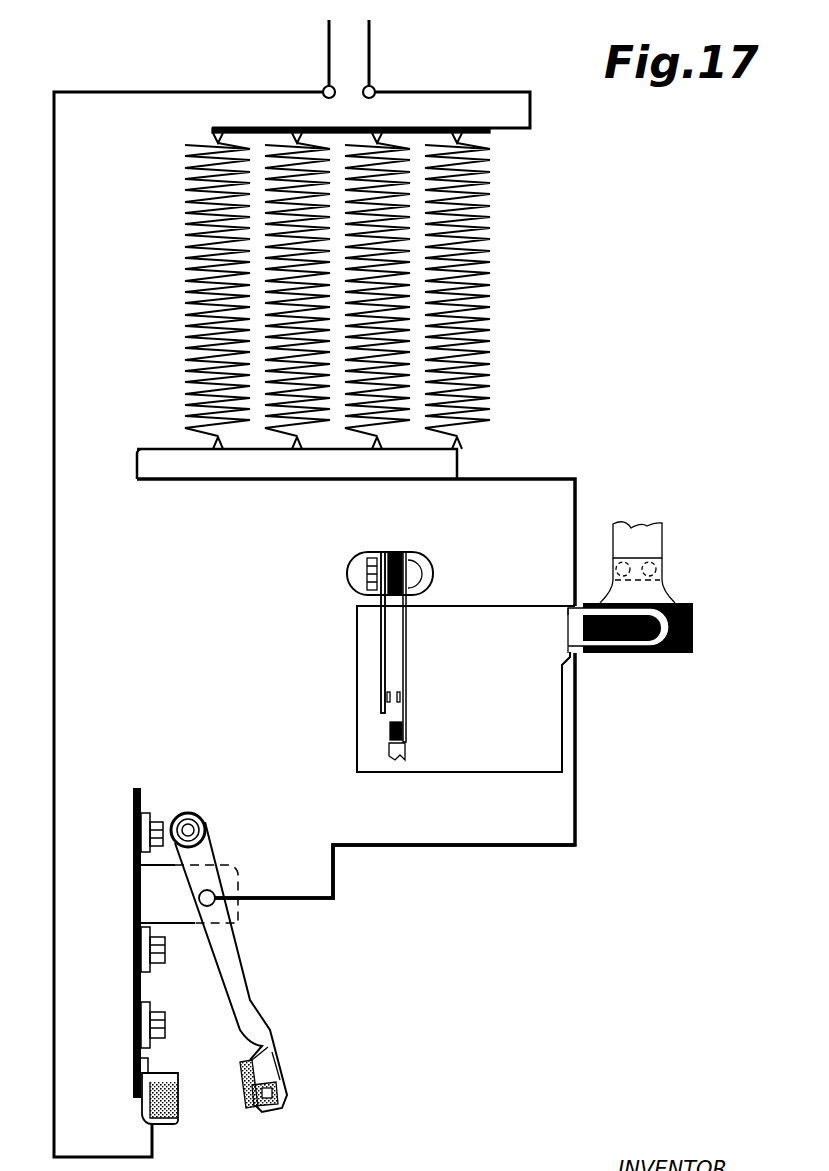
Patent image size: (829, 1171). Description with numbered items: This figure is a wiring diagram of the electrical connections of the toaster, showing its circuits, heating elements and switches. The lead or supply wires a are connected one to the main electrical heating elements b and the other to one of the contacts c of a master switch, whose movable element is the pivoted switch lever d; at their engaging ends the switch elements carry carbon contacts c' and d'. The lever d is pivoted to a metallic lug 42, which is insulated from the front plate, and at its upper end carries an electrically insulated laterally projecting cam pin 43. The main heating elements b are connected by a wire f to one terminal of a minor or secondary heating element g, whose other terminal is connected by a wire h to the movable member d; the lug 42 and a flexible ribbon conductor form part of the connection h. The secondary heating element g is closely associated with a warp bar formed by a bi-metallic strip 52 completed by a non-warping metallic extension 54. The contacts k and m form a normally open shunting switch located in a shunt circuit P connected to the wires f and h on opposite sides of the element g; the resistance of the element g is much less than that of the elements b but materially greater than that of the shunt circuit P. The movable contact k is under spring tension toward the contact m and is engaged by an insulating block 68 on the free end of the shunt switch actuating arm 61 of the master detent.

The lead or supply wires a is at (283, 92).
The main electrical heating elements b is at (185, 250).
The wire f is at (524, 479).
The wire h is at (516, 844).
The shunt circuit P is at (513, 606).
The movable contact of shunting switch k is at (404, 663).
The contact of shunting switch m is at (383, 652).
The insulating block 68 is at (400, 741).
The shunt switch actuating arm 61 is at (392, 759).
The minor or secondary heating element g is at (609, 653).
The non-warping metallic extension 54 is at (652, 540).
The bi-metallic strip 52 is at (656, 580).
The contact of master switch c is at (168, 943).
The carbon contact c' is at (181, 1109).
The cam pin 43 is at (190, 832).
The lug 42 is at (189, 894).
The movable element of master switch d is at (234, 967).
The carbon contact d' is at (261, 1102).